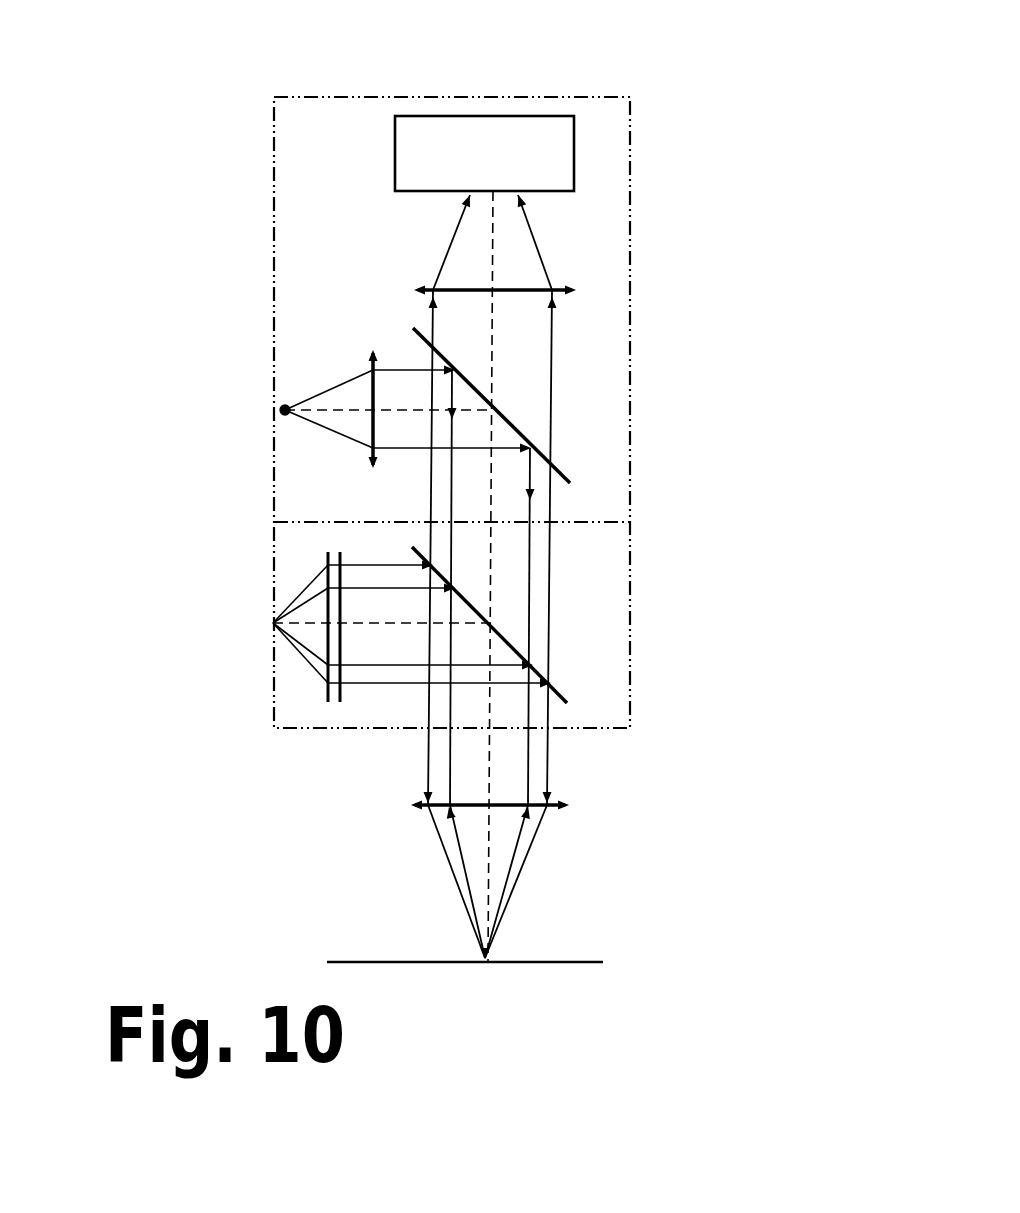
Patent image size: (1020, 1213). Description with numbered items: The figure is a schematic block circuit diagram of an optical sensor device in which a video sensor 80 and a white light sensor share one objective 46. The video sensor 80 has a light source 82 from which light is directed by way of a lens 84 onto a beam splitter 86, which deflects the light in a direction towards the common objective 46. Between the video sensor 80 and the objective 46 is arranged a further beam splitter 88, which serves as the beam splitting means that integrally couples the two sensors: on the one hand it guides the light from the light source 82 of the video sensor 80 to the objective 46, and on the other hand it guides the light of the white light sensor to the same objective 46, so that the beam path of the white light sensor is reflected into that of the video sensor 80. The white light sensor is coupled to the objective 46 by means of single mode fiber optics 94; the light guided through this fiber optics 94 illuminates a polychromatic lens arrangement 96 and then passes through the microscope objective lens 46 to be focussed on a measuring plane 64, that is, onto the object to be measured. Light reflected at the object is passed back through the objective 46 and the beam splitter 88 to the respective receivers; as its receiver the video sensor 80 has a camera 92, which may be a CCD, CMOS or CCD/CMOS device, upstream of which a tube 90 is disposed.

The video sensor 80 is at (632, 502).
The light source 82 is at (280, 408).
The lens 84 is at (370, 382).
The beam splitter 86 is at (510, 423).
The further beam splitter 88 is at (557, 690).
The tube 90 is at (550, 280).
The camera 92 is at (522, 137).
The single mode fiber optics 94 is at (198, 585).
The polychromatic lens arrangement 96 is at (328, 560).
The objective 46 is at (573, 803).
The measuring plane 64 is at (577, 958).